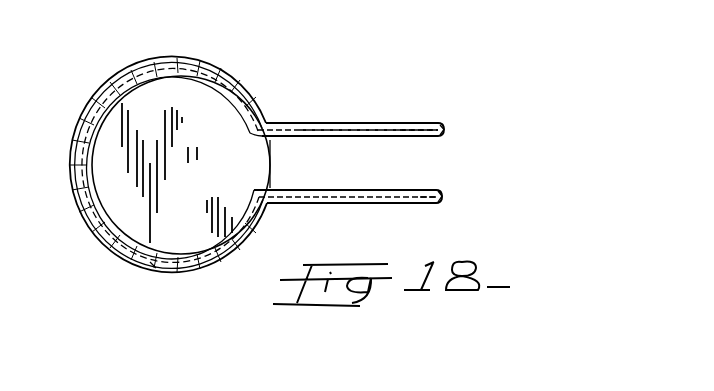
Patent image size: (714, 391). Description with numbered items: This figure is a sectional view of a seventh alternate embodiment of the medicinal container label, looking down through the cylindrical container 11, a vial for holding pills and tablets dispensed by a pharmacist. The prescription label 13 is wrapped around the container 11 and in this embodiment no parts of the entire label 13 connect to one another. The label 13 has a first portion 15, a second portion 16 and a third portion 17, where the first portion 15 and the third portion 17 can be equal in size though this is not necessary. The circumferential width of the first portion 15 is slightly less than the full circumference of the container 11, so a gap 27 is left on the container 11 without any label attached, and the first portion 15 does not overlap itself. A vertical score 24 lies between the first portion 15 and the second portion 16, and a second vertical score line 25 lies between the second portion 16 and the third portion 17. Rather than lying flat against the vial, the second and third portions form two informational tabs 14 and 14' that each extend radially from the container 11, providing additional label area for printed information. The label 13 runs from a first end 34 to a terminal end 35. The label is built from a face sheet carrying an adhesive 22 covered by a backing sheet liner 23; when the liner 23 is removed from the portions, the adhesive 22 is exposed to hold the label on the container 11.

The container 11 is at (233, 97).
The prescription label 13 is at (437, 83).
The informational tab 14 is at (351, 73).
The informational tab 14' is at (382, 215).
The first portion 15 is at (366, 123).
The second portion 16 is at (136, 66).
The third portion 17 is at (370, 205).
The adhesive 22 is at (445, 132).
The backing sheet liner 23 is at (430, 140).
The vertical score 24 is at (278, 206).
The second vertical score line 25 is at (277, 119).
The gap 27 is at (278, 166).
The first end 34 is at (445, 125).
The terminal end 35 is at (440, 203).